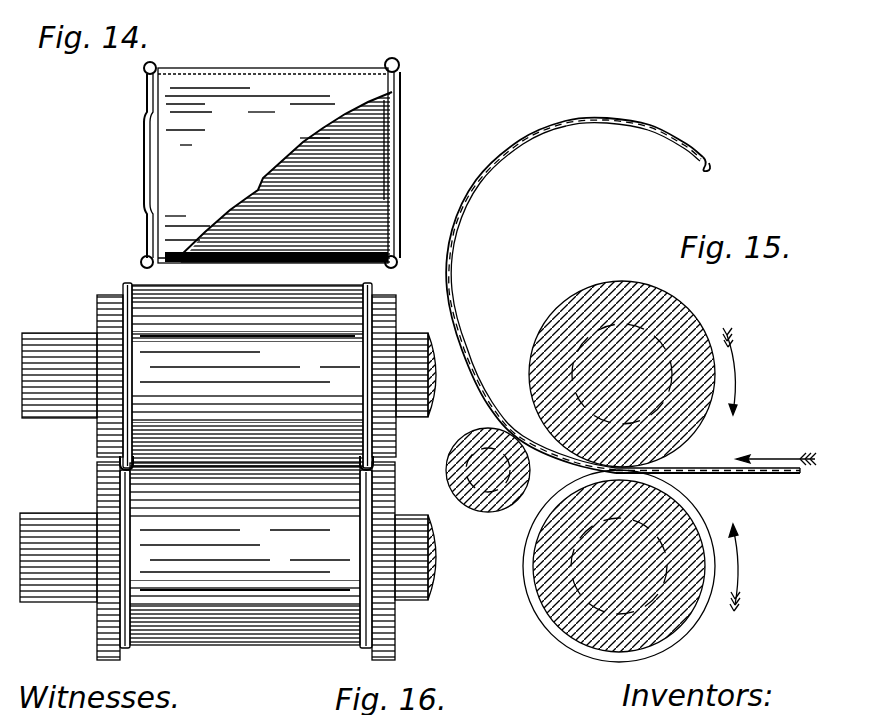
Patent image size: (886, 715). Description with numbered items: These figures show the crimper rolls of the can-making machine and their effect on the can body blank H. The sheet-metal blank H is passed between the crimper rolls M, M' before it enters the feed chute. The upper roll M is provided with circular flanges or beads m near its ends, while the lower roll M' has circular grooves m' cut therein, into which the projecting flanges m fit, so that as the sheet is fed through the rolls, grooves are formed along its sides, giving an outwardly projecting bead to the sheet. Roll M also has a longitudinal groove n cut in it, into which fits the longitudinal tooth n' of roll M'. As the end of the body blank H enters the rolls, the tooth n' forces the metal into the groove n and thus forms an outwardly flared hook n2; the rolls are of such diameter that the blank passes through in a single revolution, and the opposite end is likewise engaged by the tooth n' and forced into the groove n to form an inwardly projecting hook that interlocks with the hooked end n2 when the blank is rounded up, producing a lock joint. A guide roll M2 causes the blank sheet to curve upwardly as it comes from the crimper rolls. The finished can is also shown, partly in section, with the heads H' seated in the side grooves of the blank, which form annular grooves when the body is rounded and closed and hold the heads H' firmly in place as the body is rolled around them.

In FIG. 14, the can body blank H is at (275, 166).
In FIG. 15, the can body blank H is at (631, 295).
In FIG. 14, the can heads H' is at (268, 163).
In FIG. 15, the crimper roll M is at (616, 374).
In FIG. 16, the crimper roll M is at (229, 355).
In FIG. 16, the circular flange or bead m is at (237, 367).
In FIG. 15, the longitudinal groove n is at (727, 358).
In FIG. 16, the longitudinal groove n is at (247, 319).
In FIG. 15, the crimper roll M' is at (617, 566).
In FIG. 16, the crimper roll M' is at (228, 571).
In FIG. 16, the circular groove m' is at (246, 581).
In FIG. 15, the longitudinal tooth n' is at (745, 567).
In FIG. 16, the longitudinal tooth n' is at (245, 568).
In FIG. 15, the guide roll M2 is at (487, 504).
In FIG. 15, the outwardly flared hook n2 is at (711, 160).